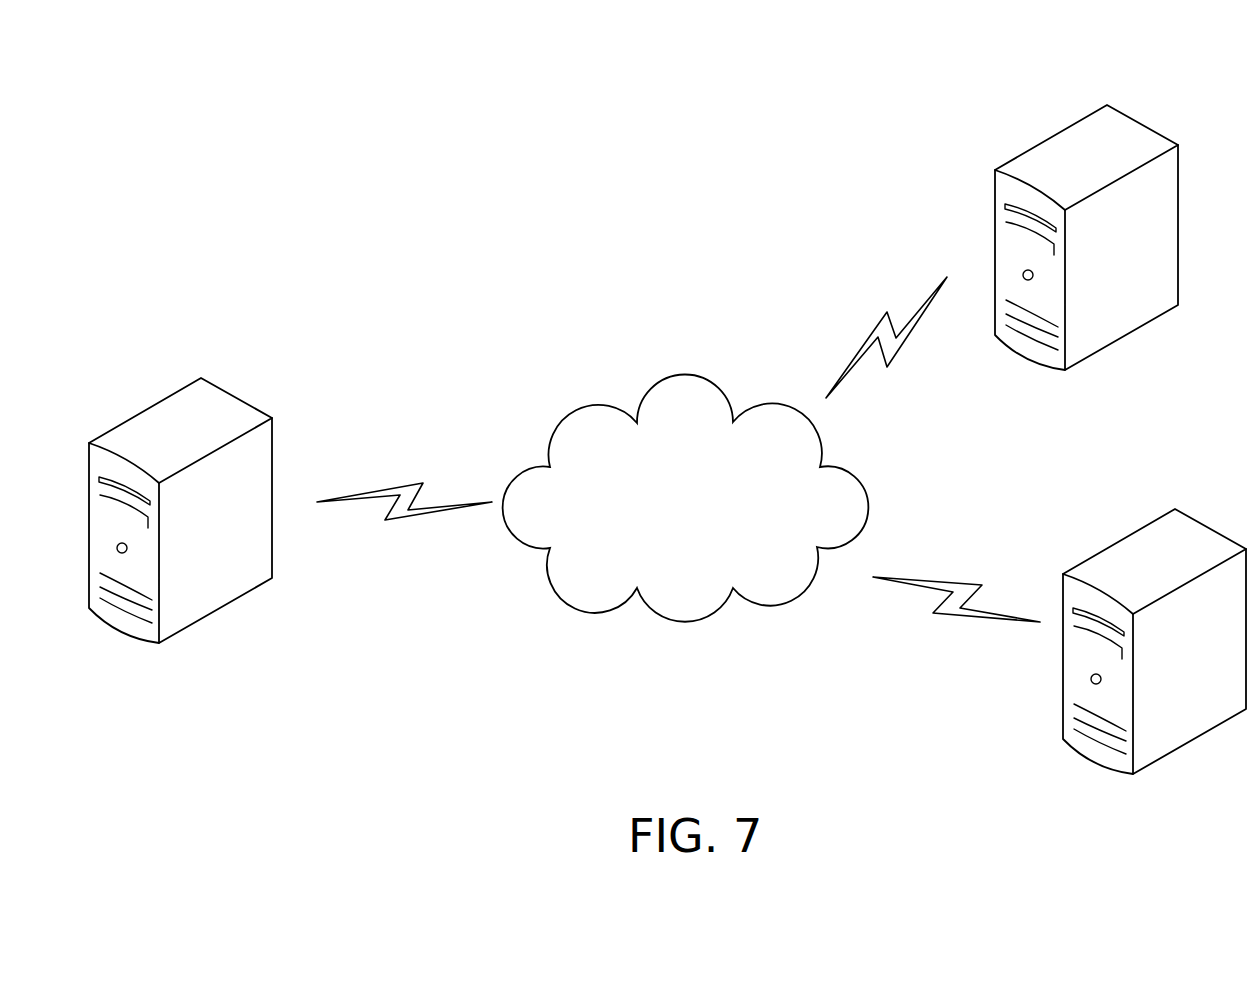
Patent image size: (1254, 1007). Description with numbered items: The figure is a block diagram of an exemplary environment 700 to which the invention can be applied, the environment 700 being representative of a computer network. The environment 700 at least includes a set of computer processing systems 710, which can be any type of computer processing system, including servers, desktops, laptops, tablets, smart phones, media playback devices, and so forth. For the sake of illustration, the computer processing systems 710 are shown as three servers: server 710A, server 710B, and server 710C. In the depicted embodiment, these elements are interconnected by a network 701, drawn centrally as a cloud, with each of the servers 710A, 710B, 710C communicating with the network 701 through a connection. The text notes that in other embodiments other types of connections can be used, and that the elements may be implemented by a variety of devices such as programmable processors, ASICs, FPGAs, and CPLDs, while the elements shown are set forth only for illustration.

The environment 700 is at (257, 83).
The network 701 is at (659, 525).
The set of computer processing systems 710 is at (293, 150).
The server 710A is at (247, 531).
The server 710B is at (1154, 257).
The server 710C is at (1219, 671).